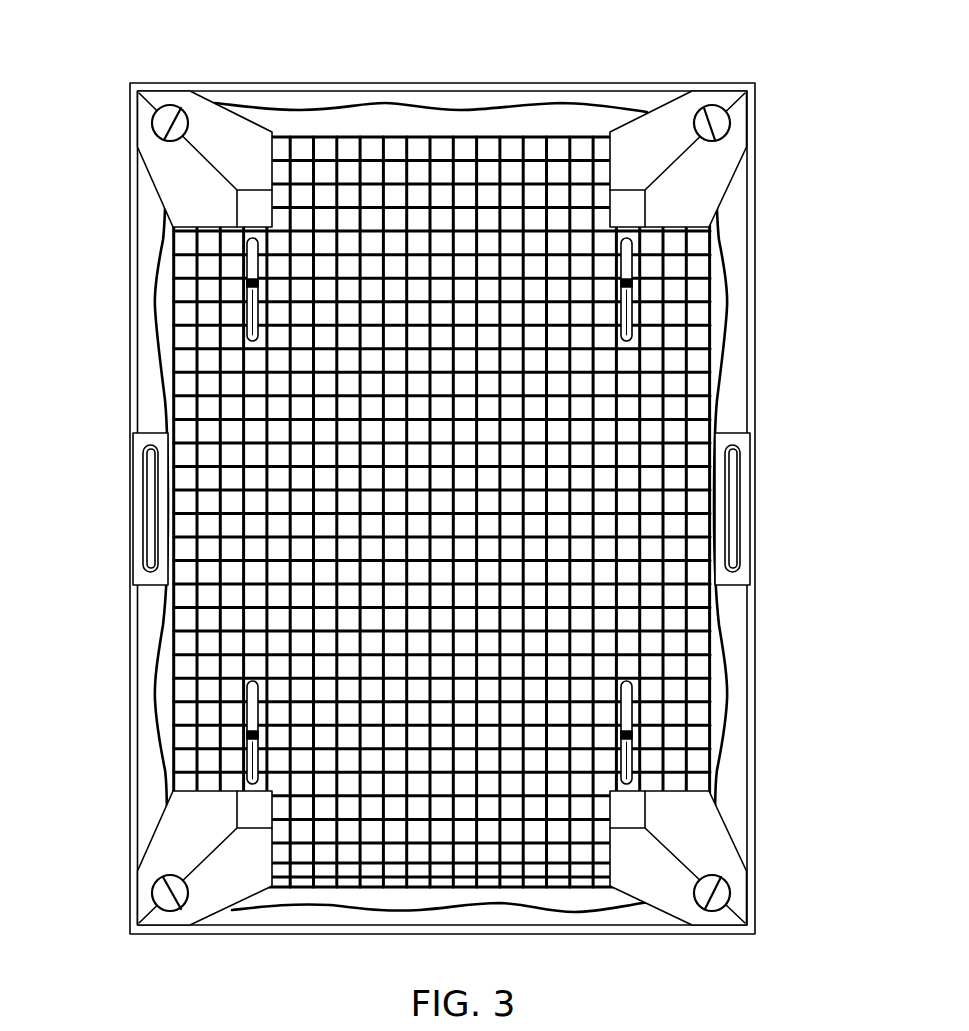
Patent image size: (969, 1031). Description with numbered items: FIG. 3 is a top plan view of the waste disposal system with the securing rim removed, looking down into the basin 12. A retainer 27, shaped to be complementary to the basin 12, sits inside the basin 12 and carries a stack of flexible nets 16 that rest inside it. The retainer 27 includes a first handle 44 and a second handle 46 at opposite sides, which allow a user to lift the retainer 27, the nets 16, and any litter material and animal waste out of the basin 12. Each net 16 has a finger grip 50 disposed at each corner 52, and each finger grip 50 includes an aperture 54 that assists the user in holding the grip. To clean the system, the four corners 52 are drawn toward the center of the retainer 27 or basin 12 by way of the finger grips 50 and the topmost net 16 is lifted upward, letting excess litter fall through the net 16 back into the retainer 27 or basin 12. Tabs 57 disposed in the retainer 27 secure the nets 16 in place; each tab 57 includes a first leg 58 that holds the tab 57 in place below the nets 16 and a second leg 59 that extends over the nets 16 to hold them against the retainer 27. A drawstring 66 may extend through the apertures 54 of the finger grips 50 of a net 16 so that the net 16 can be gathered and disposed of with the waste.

The basin 12 is at (740, 640).
The flexible nets 16 is at (688, 385).
The retainer 27 is at (422, 152).
The first handle 44 is at (140, 440).
The second handle 46 is at (748, 437).
The finger grip 50 is at (203, 115).
The corner 52 is at (220, 272).
The aperture 54 is at (164, 128).
The tab 57 is at (250, 282).
The first leg 58 is at (250, 315).
The second leg 59 is at (250, 263).
The drawstring 66 is at (717, 605).